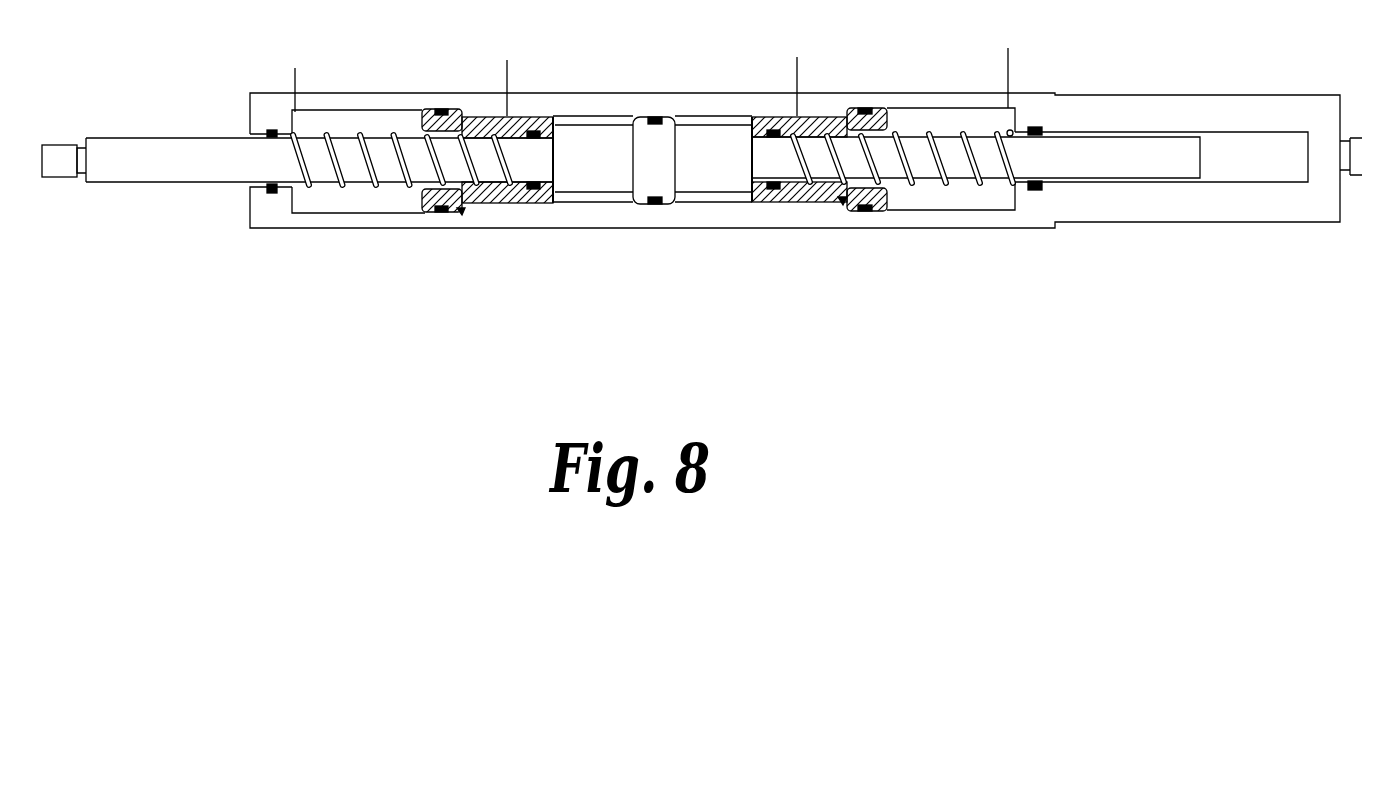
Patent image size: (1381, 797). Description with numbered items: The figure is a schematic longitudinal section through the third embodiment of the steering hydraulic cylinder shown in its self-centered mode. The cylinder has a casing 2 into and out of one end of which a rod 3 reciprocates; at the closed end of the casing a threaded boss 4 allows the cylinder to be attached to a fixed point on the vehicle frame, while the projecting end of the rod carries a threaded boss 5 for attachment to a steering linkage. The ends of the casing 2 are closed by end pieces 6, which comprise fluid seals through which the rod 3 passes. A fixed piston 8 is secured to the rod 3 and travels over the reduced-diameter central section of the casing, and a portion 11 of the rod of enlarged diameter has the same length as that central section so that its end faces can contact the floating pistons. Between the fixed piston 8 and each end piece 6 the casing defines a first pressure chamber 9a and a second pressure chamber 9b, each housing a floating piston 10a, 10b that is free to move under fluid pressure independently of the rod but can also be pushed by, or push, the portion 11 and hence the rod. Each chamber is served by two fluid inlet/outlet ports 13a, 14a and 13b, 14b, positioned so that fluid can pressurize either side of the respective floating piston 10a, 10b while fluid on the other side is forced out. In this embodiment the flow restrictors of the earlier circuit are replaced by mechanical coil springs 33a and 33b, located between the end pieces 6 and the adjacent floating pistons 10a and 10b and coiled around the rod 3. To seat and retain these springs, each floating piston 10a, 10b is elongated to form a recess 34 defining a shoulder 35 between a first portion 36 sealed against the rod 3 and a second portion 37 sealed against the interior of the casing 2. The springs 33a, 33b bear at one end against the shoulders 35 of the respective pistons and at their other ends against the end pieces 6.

The casing 2 is at (1128, 203).
The rod 3 is at (192, 172).
The threaded boss 4 is at (1360, 167).
The threaded boss 5 is at (60, 167).
The end pieces 6 is at (282, 120).
The fixed piston 8 is at (655, 172).
The first pressure chamber 9a is at (332, 200).
The second pressure chamber 9b is at (928, 193).
The floating piston 10a is at (462, 213).
The floating piston 10b is at (842, 203).
The enlarged-diameter portion of the rod 11 is at (712, 172).
The fluid inlet/outlet port 13a is at (510, 110).
The fluid inlet/outlet port 13b is at (795, 112).
The fluid inlet/outlet port 14a is at (293, 105).
The fluid inlet/outlet port 14b is at (1010, 83).
The coil spring 33a is at (368, 182).
The coil spring 33b is at (943, 176).
The recess 34 is at (488, 183).
The shoulder 35 is at (510, 188).
The first portion 36 is at (547, 190).
The second portion 37 is at (427, 205).